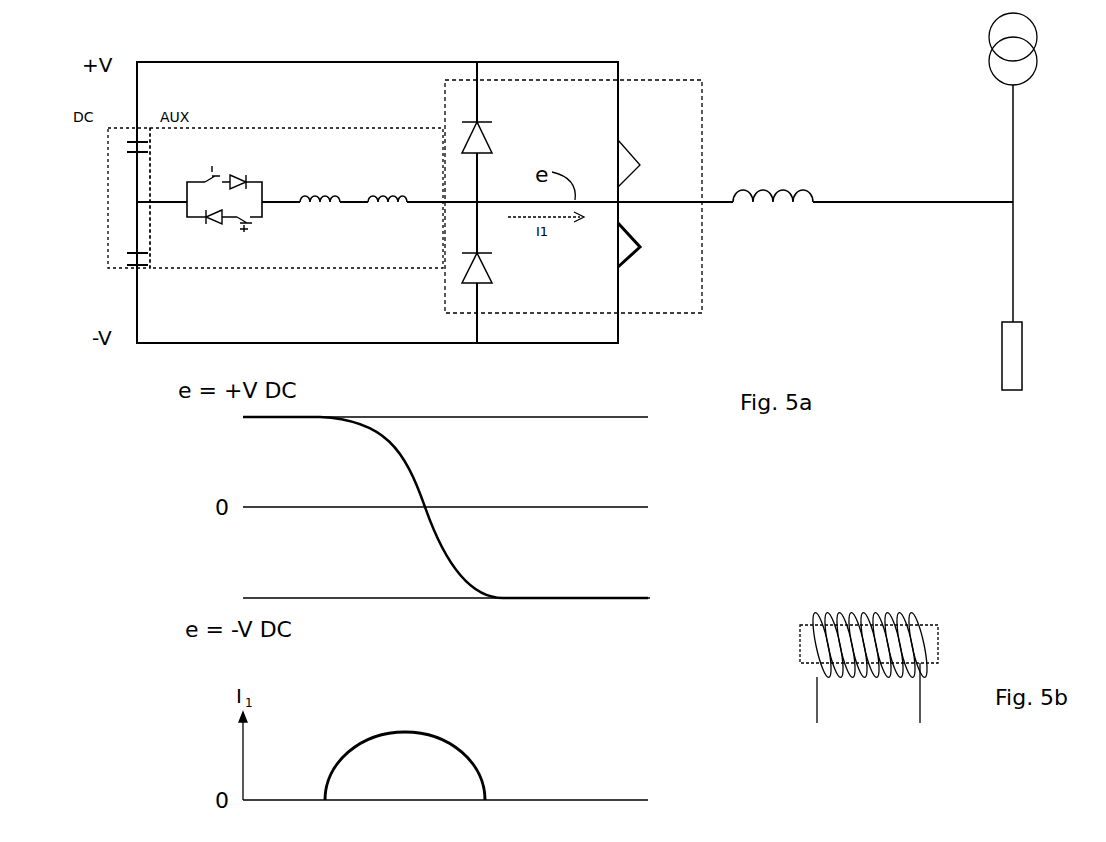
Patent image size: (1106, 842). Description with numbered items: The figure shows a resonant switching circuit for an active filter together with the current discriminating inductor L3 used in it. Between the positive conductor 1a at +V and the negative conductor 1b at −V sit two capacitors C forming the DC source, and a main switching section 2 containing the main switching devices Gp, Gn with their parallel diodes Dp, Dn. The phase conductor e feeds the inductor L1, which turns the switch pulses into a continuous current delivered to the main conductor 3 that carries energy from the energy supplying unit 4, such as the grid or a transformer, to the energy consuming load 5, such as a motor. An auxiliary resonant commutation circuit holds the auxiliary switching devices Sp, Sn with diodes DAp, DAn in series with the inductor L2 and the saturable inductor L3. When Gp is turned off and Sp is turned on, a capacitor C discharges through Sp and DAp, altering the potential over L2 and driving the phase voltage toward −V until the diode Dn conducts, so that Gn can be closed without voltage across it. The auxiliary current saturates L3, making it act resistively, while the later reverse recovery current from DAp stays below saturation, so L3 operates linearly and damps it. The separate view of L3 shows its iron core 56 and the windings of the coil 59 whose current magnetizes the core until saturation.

In FIG. 5A, the positive conductor 1a is at (222, 62).
In FIG. 5A, the negative conductor 1b is at (338, 345).
In FIG. 5A, the main switching bridge 2 is at (573, 186).
In FIG. 5A, the main conductor 3 is at (1013, 278).
In FIG. 5A, the energy supplying unit 4 is at (990, 46).
In FIG. 5A, the energy consuming load 5 is at (1002, 337).
In FIG. 5A, the capacitor C is at (129, 202).
In FIG. 5A, the auxiliary switching device Sp is at (210, 164).
In FIG. 5A, the auxiliary switching device Sn is at (242, 237).
In FIG. 5A, the auxiliary diode DAp is at (246, 172).
In FIG. 5A, the auxiliary diode DAn is at (203, 229).
In FIG. 5A, the inductor L2 is at (320, 188).
In FIG. 5A, the current discriminating inductor L3 is at (387, 188).
In FIG. 5B, the current discriminating inductor L3 is at (873, 627).
In FIG. 5A, the diode Dp is at (488, 137).
In FIG. 5A, the negative diode Dn is at (488, 268).
In FIG. 5A, the main switching device Gp is at (641, 163).
In FIG. 5A, the main switching device Gn is at (641, 245).
In FIG. 5A, the inductor L1 is at (773, 183).
In FIG. 5B, the iron core 56 is at (812, 620).
In FIG. 5B, the windings of the coil 59 is at (817, 692).